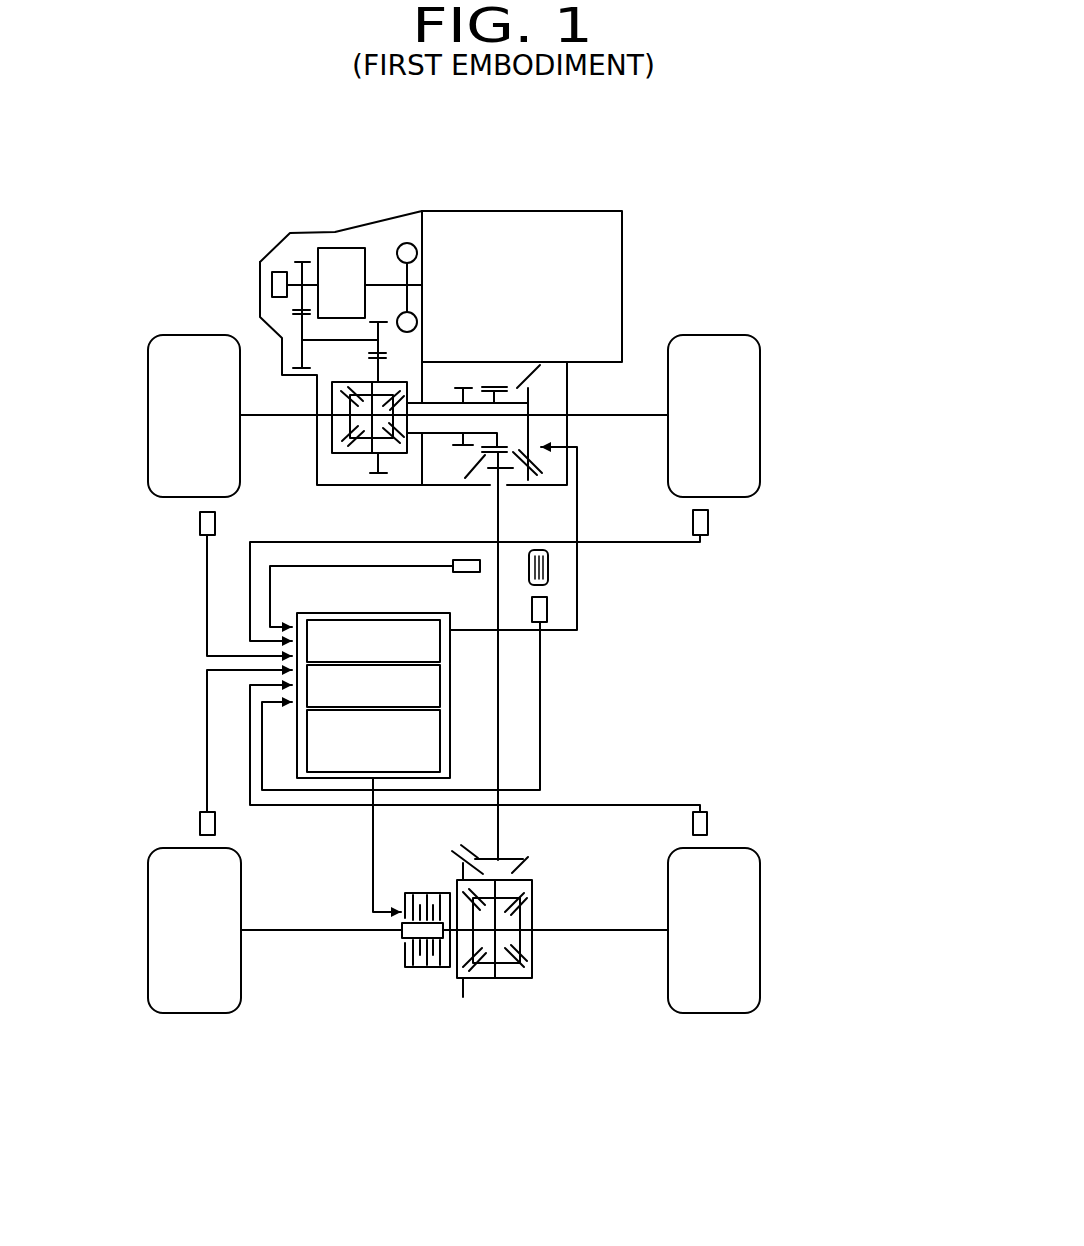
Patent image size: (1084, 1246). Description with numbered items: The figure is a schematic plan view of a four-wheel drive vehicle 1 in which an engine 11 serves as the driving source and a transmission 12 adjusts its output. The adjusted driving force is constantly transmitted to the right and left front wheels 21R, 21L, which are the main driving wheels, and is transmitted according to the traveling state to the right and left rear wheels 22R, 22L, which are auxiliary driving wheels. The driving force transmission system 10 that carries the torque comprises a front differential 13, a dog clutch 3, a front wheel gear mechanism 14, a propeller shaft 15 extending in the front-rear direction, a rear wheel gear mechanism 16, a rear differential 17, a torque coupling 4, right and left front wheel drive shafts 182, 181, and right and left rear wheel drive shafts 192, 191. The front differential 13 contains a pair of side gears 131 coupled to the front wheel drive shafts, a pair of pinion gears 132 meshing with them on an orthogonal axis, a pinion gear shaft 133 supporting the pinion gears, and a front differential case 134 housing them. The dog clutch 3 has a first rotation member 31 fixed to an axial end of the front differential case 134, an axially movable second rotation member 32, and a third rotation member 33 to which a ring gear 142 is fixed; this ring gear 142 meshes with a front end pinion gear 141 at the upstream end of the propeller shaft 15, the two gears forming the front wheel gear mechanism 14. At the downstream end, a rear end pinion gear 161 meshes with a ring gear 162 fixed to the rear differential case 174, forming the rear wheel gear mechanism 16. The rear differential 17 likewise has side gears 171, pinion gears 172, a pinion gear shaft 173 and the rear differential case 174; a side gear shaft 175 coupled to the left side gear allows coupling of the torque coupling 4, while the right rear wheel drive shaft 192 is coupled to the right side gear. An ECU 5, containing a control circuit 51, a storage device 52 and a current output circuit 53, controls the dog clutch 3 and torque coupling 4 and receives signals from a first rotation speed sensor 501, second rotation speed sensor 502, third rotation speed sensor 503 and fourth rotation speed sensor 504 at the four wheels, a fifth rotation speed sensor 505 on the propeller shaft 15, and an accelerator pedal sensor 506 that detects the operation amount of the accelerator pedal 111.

The four-wheel drive vehicle 1 is at (699, 154).
The dog clutch 3 is at (512, 367).
The torque coupling 4 is at (386, 1002).
The electric control unit (ECU) 5 is at (347, 612).
The driving force transmission system 10 is at (438, 1053).
The engine 11 is at (482, 210).
The transmission 12 is at (308, 245).
The front differential 13 is at (338, 465).
The front wheel gear mechanism 14 is at (740, 552).
The propeller shaft 15 is at (500, 732).
The rear wheel gear mechanism 16 is at (720, 728).
The rear differential 17 is at (544, 960).
The left front wheel 21L is at (148, 412).
The right front wheel 21R is at (762, 405).
The left rear wheel 22L is at (148, 935).
The right rear wheel 22R is at (760, 940).
The first rotation member 31 is at (462, 402).
The second rotation member 32 is at (488, 387).
The third rotation member 33 is at (492, 445).
The control circuit 51 is at (450, 630).
The storage device 52 is at (442, 690).
The current output circuit 53 is at (442, 723).
The accelerator pedal 111 is at (537, 548).
The side gears 131 is at (350, 427).
The pinion gears 132 is at (353, 397).
The pinion gear shaft 133 is at (368, 417).
The front differential case 134 is at (370, 381).
The front end pinion gear 141 is at (513, 468).
The ring gear 142 is at (528, 390).
The rear end pinion gear 161 is at (536, 858).
The ring gear 162 is at (462, 846).
The side gears 171 is at (520, 912).
The pinion gears 172 is at (513, 893).
The pinion gear shaft 173 is at (497, 928).
The rear differential case 174 is at (520, 980).
The side gear shaft 175 is at (460, 933).
The left front wheel drive shaft 181 is at (305, 415).
The right front wheel drive shaft 182 is at (597, 414).
The left rear wheel drive shaft 191 is at (330, 933).
The right rear wheel drive shaft 192 is at (583, 935).
The first rotation speed sensor 501 is at (202, 530).
The second rotation speed sensor 502 is at (710, 525).
The third rotation speed sensor 503 is at (200, 812).
The fourth rotation speed sensor 504 is at (710, 820).
The fifth rotation speed sensor 505 is at (467, 573).
The accelerator pedal sensor 506 is at (549, 605).